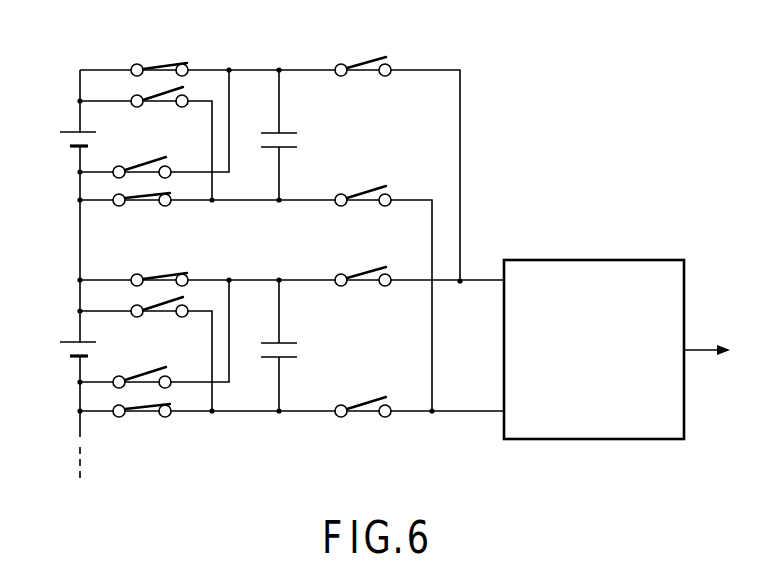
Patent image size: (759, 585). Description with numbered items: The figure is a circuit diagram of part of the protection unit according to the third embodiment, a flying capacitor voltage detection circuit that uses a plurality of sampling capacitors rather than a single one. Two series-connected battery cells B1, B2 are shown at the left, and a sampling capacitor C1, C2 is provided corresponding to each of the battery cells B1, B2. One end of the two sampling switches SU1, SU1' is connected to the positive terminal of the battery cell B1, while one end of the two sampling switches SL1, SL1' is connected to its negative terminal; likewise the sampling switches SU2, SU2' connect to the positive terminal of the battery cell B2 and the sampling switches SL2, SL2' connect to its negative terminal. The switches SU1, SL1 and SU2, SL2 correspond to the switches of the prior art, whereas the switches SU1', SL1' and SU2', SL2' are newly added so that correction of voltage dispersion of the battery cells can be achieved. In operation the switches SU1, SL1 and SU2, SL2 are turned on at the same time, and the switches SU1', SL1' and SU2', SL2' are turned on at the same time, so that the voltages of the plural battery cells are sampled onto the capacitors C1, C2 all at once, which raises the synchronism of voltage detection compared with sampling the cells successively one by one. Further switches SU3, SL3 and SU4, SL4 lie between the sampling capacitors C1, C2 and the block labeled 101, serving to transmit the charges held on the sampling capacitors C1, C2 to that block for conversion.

The ADC (analog-to-digital converter) 101 is at (594, 259).
The battery cell B1 is at (63, 137).
The battery cell B2 is at (63, 347).
The sampling capacitor C1 is at (297, 135).
The sampling capacitor C2 is at (295, 345).
The sampling switch SU1 is at (160, 52).
The sampling switch SU1' is at (162, 111).
The sampling switch SL1 is at (139, 216).
The sampling switch SL1' is at (139, 156).
The sampling switch SU2 is at (160, 263).
The sampling switch SU2' is at (162, 321).
The sampling switch SL2 is at (139, 427).
The sampling switch SL2' is at (139, 366).
The switch 3 upper SU3 is at (373, 53).
The switch 3 lower SL3 is at (354, 212).
The switch 4 upper SU4 is at (373, 263).
The switch 4 lower SL4 is at (363, 421).